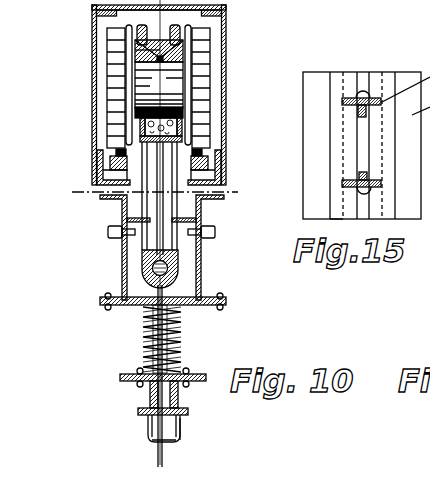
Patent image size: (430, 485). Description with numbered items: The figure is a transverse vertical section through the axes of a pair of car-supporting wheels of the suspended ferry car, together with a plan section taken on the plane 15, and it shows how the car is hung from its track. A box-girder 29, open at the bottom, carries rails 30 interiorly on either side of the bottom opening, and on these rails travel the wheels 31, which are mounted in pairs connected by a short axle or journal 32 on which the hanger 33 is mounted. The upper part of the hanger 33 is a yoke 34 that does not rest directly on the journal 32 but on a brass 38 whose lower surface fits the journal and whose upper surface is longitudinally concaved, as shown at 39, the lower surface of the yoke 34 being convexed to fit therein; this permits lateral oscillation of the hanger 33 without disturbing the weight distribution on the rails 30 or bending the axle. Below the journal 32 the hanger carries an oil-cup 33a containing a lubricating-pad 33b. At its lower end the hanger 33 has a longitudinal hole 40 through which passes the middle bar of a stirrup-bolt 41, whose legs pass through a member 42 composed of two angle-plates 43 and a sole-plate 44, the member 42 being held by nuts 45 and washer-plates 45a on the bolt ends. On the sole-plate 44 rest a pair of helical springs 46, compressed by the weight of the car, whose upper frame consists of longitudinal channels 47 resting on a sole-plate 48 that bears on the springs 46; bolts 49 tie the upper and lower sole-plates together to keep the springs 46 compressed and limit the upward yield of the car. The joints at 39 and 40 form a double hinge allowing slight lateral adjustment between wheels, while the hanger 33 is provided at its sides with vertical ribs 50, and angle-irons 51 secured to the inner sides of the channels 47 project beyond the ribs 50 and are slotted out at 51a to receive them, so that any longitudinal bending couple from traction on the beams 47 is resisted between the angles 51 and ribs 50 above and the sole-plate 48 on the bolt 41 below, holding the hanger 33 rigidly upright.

In FIG. 10, the plane 15 is at (152, 190).
In FIG. 10, the box-girder 29 is at (226, 120).
In FIG. 10, the rail 30 is at (118, 166).
In FIG. 10, the wheel 31 is at (205, 48).
In FIG. 10, the axle or journal 32 is at (159, 90).
In FIG. 10, the hanger 33 is at (156, 233).
In FIG. 15, the hanger 33 is at (367, 177).
In FIG. 10, the oil-cup 33a is at (145, 137).
In FIG. 10, the lubricating-pad 33b is at (147, 125).
In FIG. 10, the yoke 34 is at (136, 38).
In FIG. 10, the brass 38 is at (184, 59).
In FIG. 10, the concaved surface 39 is at (136, 51).
In FIG. 10, the longitudinal hole 40 is at (180, 264).
In FIG. 10, the stirrup-bolt 41 is at (166, 293).
In FIG. 15, the stirrup-bolt 41 is at (352, 202).
In FIG. 10, the member 42 is at (191, 404).
In FIG. 10, the angle-plate 43 is at (170, 385).
In FIG. 10, the sole-plate 44 is at (128, 374).
In FIG. 10, the nut 45 is at (156, 431).
In FIG. 10, the washer-plate 45a is at (181, 419).
In FIG. 10, the helical spring 46 is at (178, 331).
In FIG. 10, the longitudinal channel 47 is at (200, 253).
In FIG. 15, the longitudinal channel 47 is at (304, 127).
In FIG. 10, the sole-plate 48 is at (131, 305).
In FIG. 15, the sole-plate 48 is at (358, 79).
In FIG. 10, the bolt 49 is at (150, 355).
In FIG. 10, the vertical rib 50 is at (161, 196).
In FIG. 15, the vertical rib 50 is at (343, 187).
In FIG. 10, the angle-iron 51 is at (212, 212).
In FIG. 15, the angle-iron 51 is at (383, 80).
In FIG. 15, the slot 51a is at (366, 145).